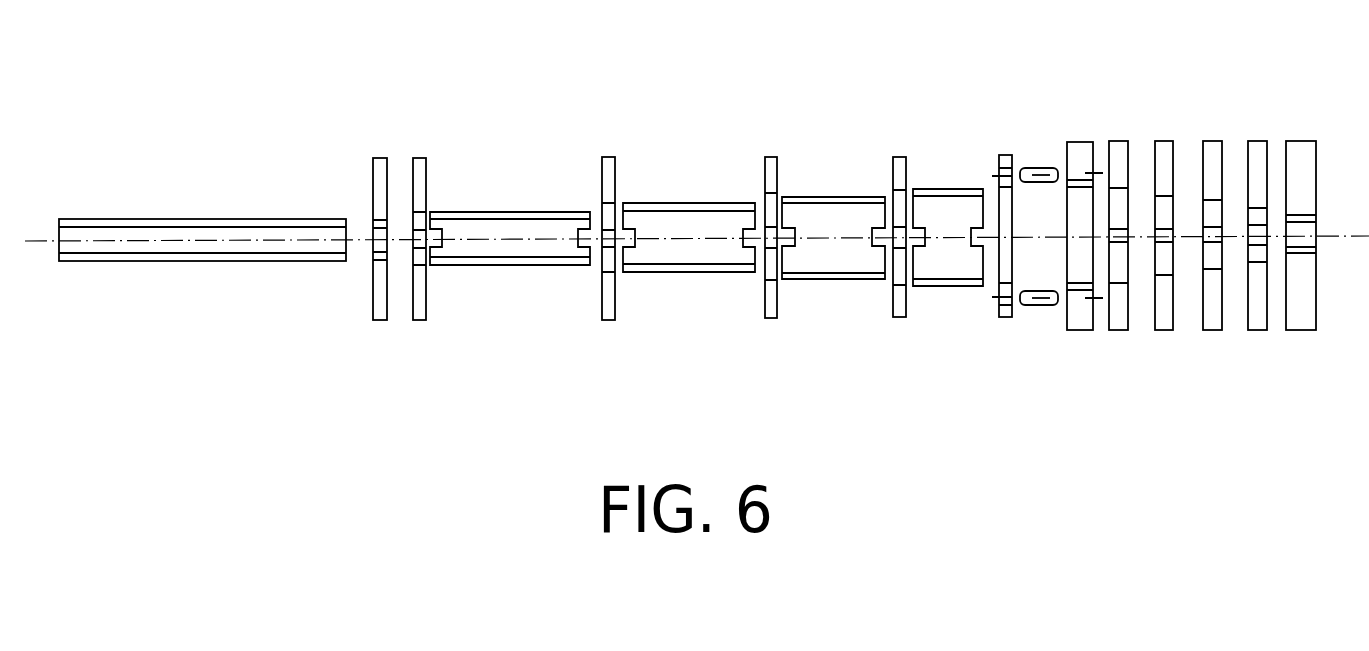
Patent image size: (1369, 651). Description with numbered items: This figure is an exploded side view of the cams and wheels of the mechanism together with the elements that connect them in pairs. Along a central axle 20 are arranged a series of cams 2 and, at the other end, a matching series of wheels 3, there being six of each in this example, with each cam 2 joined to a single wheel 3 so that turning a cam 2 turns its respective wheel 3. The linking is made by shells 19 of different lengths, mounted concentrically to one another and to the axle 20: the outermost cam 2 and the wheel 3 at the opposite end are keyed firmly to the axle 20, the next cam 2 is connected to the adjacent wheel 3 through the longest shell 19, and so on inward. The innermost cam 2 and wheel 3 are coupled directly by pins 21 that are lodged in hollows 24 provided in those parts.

The axle 20 is at (253, 245).
The cam 2 is at (603, 297).
The shell 19 is at (945, 213).
The pin 21 is at (1040, 293).
The hollow 24 is at (1005, 168).
The wheel 3 is at (1302, 317).